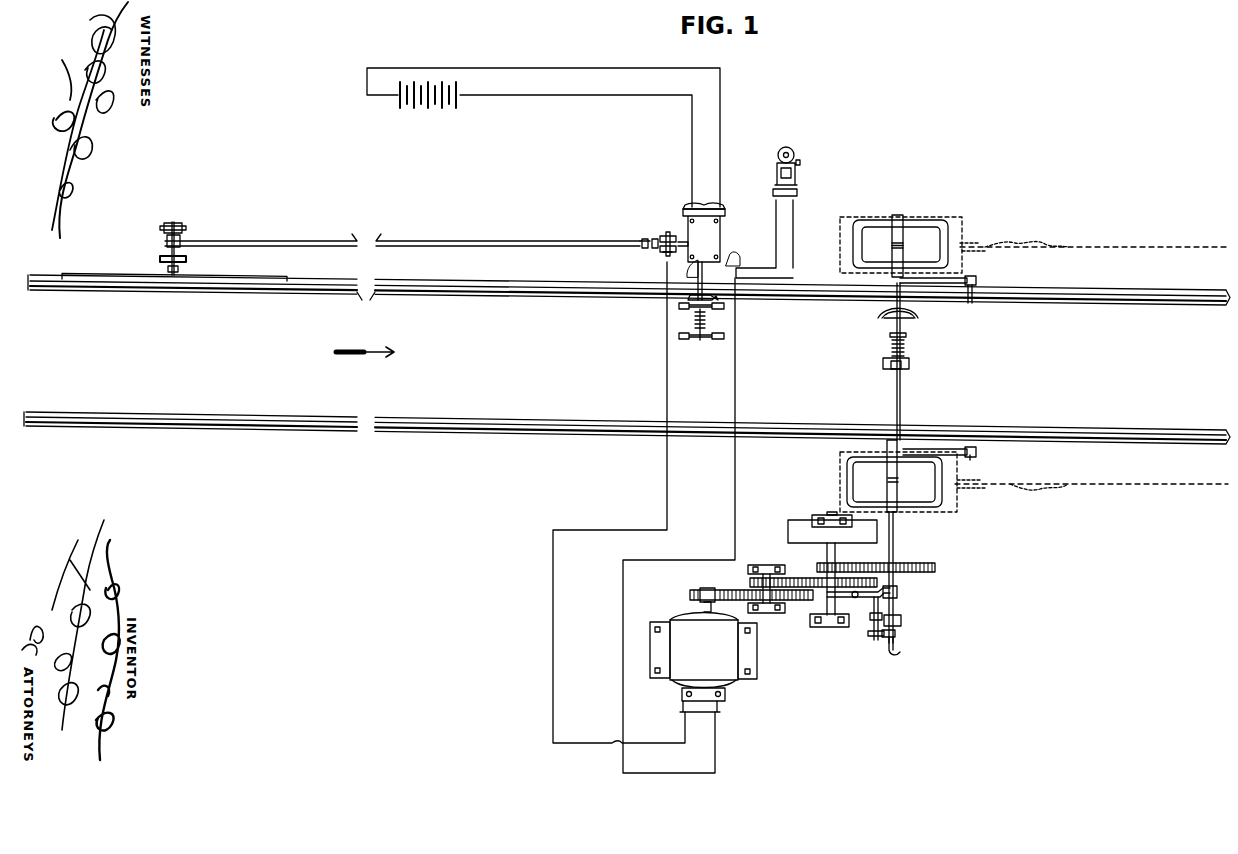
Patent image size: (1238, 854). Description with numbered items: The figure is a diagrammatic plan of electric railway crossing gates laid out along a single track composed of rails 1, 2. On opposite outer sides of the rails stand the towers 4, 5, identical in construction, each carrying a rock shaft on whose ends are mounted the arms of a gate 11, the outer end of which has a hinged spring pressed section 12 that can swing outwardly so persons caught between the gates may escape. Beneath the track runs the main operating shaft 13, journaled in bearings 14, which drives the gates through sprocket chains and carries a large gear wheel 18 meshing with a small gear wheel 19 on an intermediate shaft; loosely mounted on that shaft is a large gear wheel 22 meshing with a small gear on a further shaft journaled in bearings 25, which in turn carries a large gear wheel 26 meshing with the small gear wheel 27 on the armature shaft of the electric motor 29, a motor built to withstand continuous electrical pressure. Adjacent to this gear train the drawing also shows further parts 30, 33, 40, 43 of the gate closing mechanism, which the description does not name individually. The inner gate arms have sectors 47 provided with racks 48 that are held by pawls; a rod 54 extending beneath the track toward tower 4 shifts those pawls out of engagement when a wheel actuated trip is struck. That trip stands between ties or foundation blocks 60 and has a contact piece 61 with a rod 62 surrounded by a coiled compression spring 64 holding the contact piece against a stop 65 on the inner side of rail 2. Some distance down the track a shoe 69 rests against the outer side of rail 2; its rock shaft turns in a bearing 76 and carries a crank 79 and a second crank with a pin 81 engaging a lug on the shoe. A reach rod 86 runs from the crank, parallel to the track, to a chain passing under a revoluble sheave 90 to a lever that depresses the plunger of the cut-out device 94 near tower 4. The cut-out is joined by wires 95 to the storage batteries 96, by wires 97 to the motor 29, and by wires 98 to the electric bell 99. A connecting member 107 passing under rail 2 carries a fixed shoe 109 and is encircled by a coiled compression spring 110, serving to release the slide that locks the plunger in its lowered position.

The rail 1 is at (372, 412).
The rail 2 is at (629, 301).
The tower 4 is at (872, 228).
The tower 5 is at (898, 476).
The gate 11 is at (986, 246).
The hinged spring pressed section 12 is at (892, 246).
The main operating shaft 13 is at (895, 531).
The bearings 14 is at (903, 620).
The large gear wheel 18 is at (936, 567).
The small gear wheel 19 is at (822, 560).
The large gear wheel 22 is at (898, 594).
The bearings 25 is at (780, 612).
The large gear wheel 26 is at (752, 588).
The small gear wheel 27 is at (690, 595).
The electric motor 29 is at (703, 663).
The shaft 30 is at (826, 600).
The rod 33 is at (874, 605).
The cross piece 40 is at (878, 638).
The hook 43 is at (900, 652).
The sectors 47 is at (962, 279).
The racks 48 is at (970, 300).
The rod 54 is at (902, 398).
The ties or foundation blocks 60 is at (910, 365).
The contact piece 61 is at (884, 322).
The rod 62 is at (891, 369).
The coiled compression spring 64 is at (906, 345).
The stop 65 is at (880, 314).
The shoe 69 is at (98, 273).
The bearing 76 is at (180, 224).
The crank 79 is at (167, 239).
The pin 81 is at (663, 252).
The reach rod 86 is at (402, 226).
The revoluble sheave 90 is at (664, 244).
The cut-out device 94 is at (716, 236).
The wires 95 is at (722, 110).
The storage batteries 96 is at (440, 108).
The wires 97 is at (665, 483).
The wires 98 is at (795, 232).
The electric bell 99 is at (797, 172).
The connecting member 107 is at (690, 290).
The fixed shoe 109 is at (706, 306).
The coiled compression spring 110 is at (706, 325).